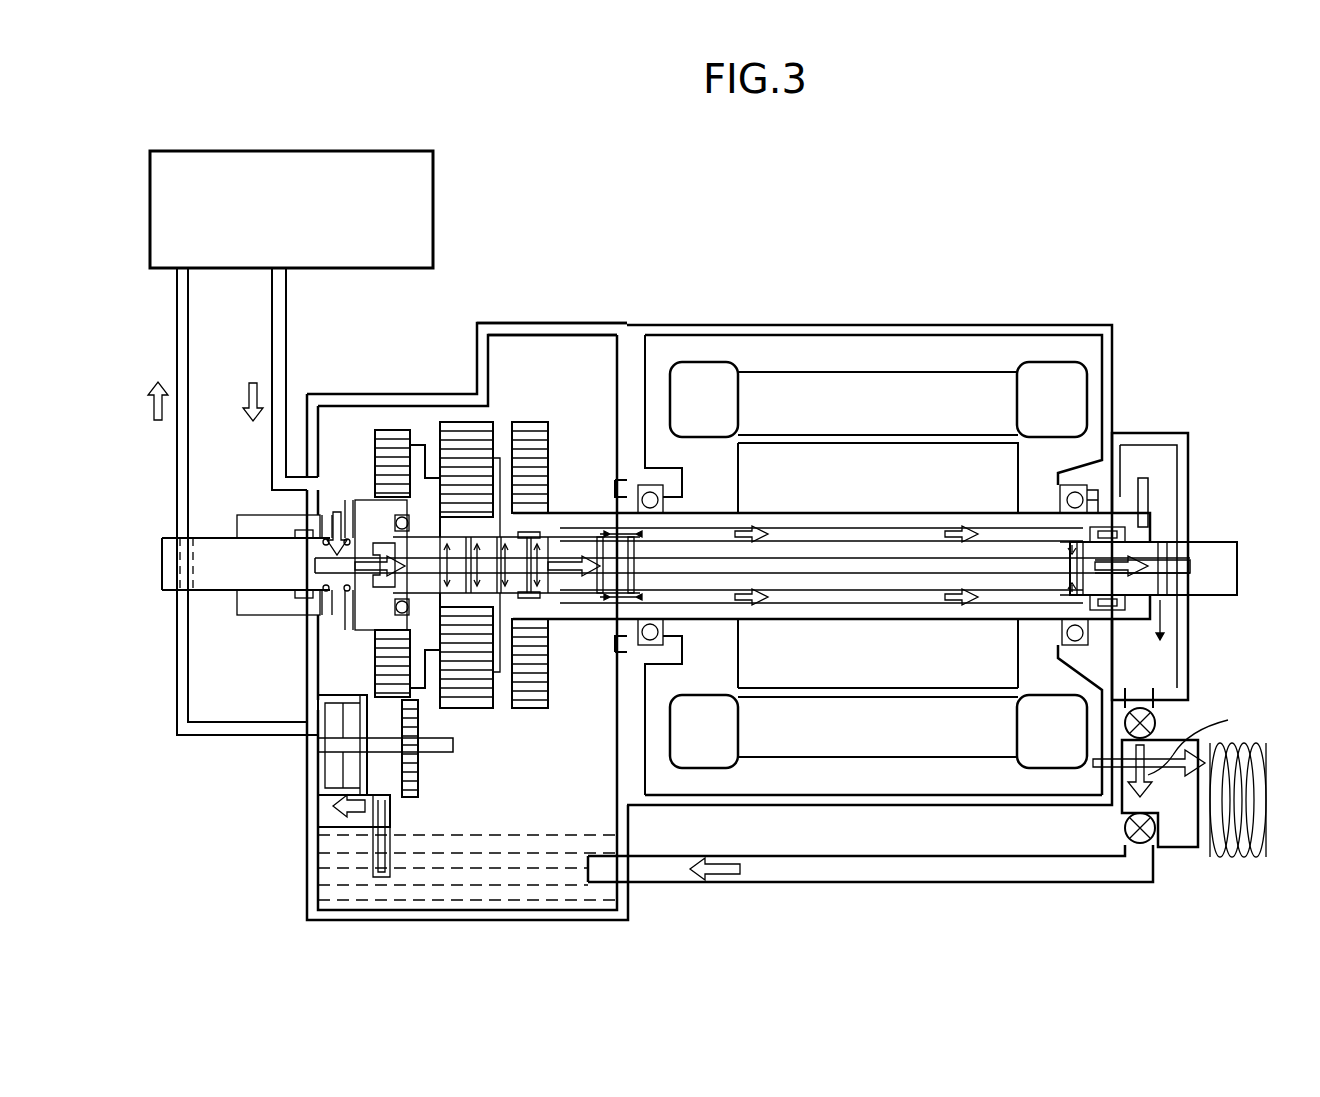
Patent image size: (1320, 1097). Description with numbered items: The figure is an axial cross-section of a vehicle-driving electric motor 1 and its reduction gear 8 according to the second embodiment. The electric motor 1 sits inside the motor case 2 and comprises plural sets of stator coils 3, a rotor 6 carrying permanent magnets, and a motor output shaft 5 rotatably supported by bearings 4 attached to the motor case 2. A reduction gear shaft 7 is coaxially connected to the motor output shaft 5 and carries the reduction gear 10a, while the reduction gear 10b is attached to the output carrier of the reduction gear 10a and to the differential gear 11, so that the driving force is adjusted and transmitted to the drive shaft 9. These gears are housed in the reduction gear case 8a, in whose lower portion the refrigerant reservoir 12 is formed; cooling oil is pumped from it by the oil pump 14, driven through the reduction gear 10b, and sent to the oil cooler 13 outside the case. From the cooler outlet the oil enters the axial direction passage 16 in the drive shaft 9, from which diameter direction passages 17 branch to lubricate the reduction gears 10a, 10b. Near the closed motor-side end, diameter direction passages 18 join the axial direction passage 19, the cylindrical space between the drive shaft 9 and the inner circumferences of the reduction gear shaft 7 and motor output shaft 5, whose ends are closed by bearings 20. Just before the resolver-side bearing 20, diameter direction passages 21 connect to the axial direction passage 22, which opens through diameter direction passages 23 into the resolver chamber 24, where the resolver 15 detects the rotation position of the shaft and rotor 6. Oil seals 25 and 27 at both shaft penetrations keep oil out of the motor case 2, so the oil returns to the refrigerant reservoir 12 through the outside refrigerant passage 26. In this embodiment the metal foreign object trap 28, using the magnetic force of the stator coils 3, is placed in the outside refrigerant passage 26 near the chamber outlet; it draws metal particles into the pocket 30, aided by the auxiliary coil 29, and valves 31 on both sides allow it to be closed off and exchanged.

The electric motor 1 is at (860, 302).
The motor case 2 is at (1058, 322).
The stator coils 3 is at (820, 740).
The bearings 4 is at (660, 486).
The motor output shaft 5 is at (920, 613).
The rotor 6 is at (865, 668).
The reduction gear shaft 7 is at (610, 505).
The reduction gear 8 is at (500, 295).
The reduction gear case 8a is at (558, 323).
The drive shaft 9 is at (980, 565).
The reduction gear 10a is at (525, 430).
The reduction gear 10b is at (455, 425).
The differential gear 11 is at (376, 469).
The refrigerant reservoir 12 is at (325, 875).
The oil cooler 13 is at (216, 152).
The oil pump 14 is at (325, 775).
The resolver 15 is at (1148, 484).
The axial direction passage 16 is at (322, 565).
The diameter direction passages 17 is at (455, 598).
The diameter direction passages 18 is at (603, 545).
The axial direction passage 19 is at (717, 529).
The bearings 20 is at (530, 542).
The diameter direction passages 21 is at (1075, 583).
The axial direction passage 22 is at (1180, 568).
The diameter direction passages 23 is at (1180, 548).
The resolver chamber 24 is at (1165, 510).
The oil seal 25 is at (1103, 490).
The outside refrigerant passage 26 is at (680, 886).
The oil seal 27 is at (617, 650).
The metal foreign object trap 28 is at (1124, 812).
The auxiliary coil 29 is at (1267, 790).
The pocket 30 is at (1180, 848).
The valves 31 is at (1155, 724).